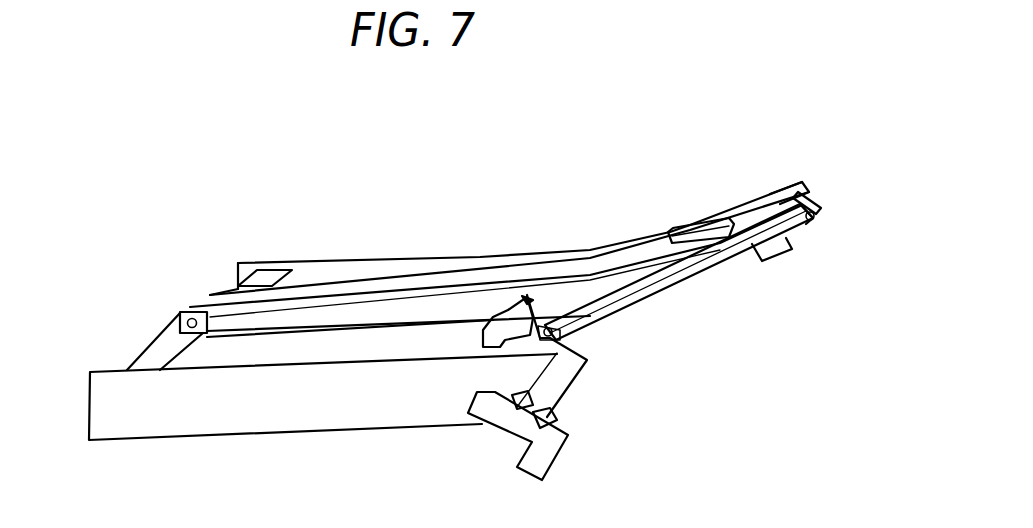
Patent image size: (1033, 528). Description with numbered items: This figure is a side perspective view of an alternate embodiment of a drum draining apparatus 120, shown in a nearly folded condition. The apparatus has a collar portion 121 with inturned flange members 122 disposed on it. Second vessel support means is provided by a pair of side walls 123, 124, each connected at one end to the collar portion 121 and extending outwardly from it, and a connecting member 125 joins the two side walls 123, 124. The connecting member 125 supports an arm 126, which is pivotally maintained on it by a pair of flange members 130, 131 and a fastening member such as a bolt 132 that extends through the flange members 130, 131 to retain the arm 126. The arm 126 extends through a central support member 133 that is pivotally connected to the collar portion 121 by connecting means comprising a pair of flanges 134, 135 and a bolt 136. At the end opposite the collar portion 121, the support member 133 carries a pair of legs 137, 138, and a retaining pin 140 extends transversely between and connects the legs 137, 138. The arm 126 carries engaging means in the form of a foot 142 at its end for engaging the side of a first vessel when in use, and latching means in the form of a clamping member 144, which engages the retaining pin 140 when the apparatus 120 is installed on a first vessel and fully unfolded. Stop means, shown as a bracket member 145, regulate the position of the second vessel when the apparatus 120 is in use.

The drum draining apparatus 120 is at (308, 172).
The collar portion 121 is at (597, 370).
The inturned flange members 122 is at (482, 333).
The side wall 123 is at (259, 412).
The side wall 124 is at (352, 258).
The connecting member 125 is at (144, 351).
The arm 126 is at (590, 247).
The flange member 130 is at (200, 336).
The flange member 131 is at (223, 292).
The bolt 132 is at (203, 311).
The central support member 133 is at (699, 262).
The flange 134 is at (617, 301).
The flange 135 is at (525, 297).
The bolt 136 is at (562, 337).
The leg 137 is at (814, 221).
The leg 138 is at (770, 199).
The retaining pin 140 is at (809, 194).
The foot 142 is at (782, 258).
The clamping member 144 is at (692, 222).
The bracket member 145 is at (550, 467).